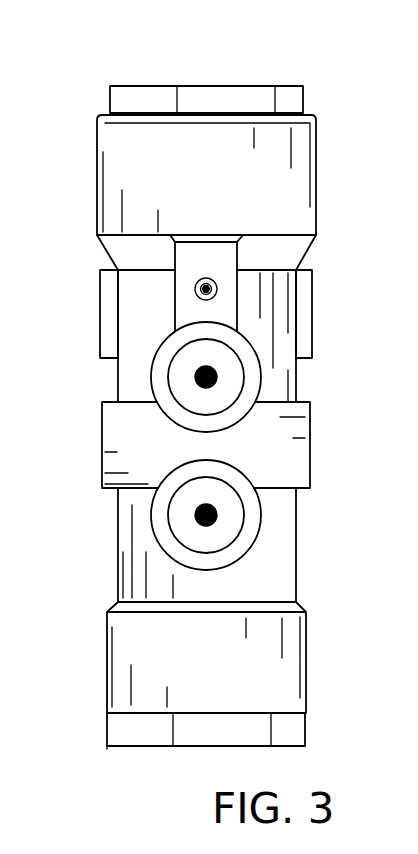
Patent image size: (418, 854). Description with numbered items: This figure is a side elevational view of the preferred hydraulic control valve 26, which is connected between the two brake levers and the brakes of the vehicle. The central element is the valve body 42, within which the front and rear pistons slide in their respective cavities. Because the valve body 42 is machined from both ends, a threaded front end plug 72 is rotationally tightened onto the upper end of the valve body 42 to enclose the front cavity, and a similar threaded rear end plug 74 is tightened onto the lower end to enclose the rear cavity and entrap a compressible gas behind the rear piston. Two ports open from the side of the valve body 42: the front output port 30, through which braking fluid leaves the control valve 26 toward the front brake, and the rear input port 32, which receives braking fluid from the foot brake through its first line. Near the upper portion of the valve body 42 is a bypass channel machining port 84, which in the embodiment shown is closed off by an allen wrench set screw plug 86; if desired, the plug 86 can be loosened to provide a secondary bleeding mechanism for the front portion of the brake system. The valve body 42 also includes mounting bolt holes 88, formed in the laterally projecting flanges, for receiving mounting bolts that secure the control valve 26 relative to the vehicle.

The control valve 26 is at (256, 52).
The front end plug 72 is at (142, 86).
The valve body 42 is at (112, 212).
The bypass channel machining port 84 is at (222, 297).
The allen wrench set screw plug 86 is at (193, 291).
The mounting bolt holes 88 is at (100, 335).
The front output port 30 is at (225, 375).
The rear input port 32 is at (225, 517).
The rear end plug 74 is at (198, 747).